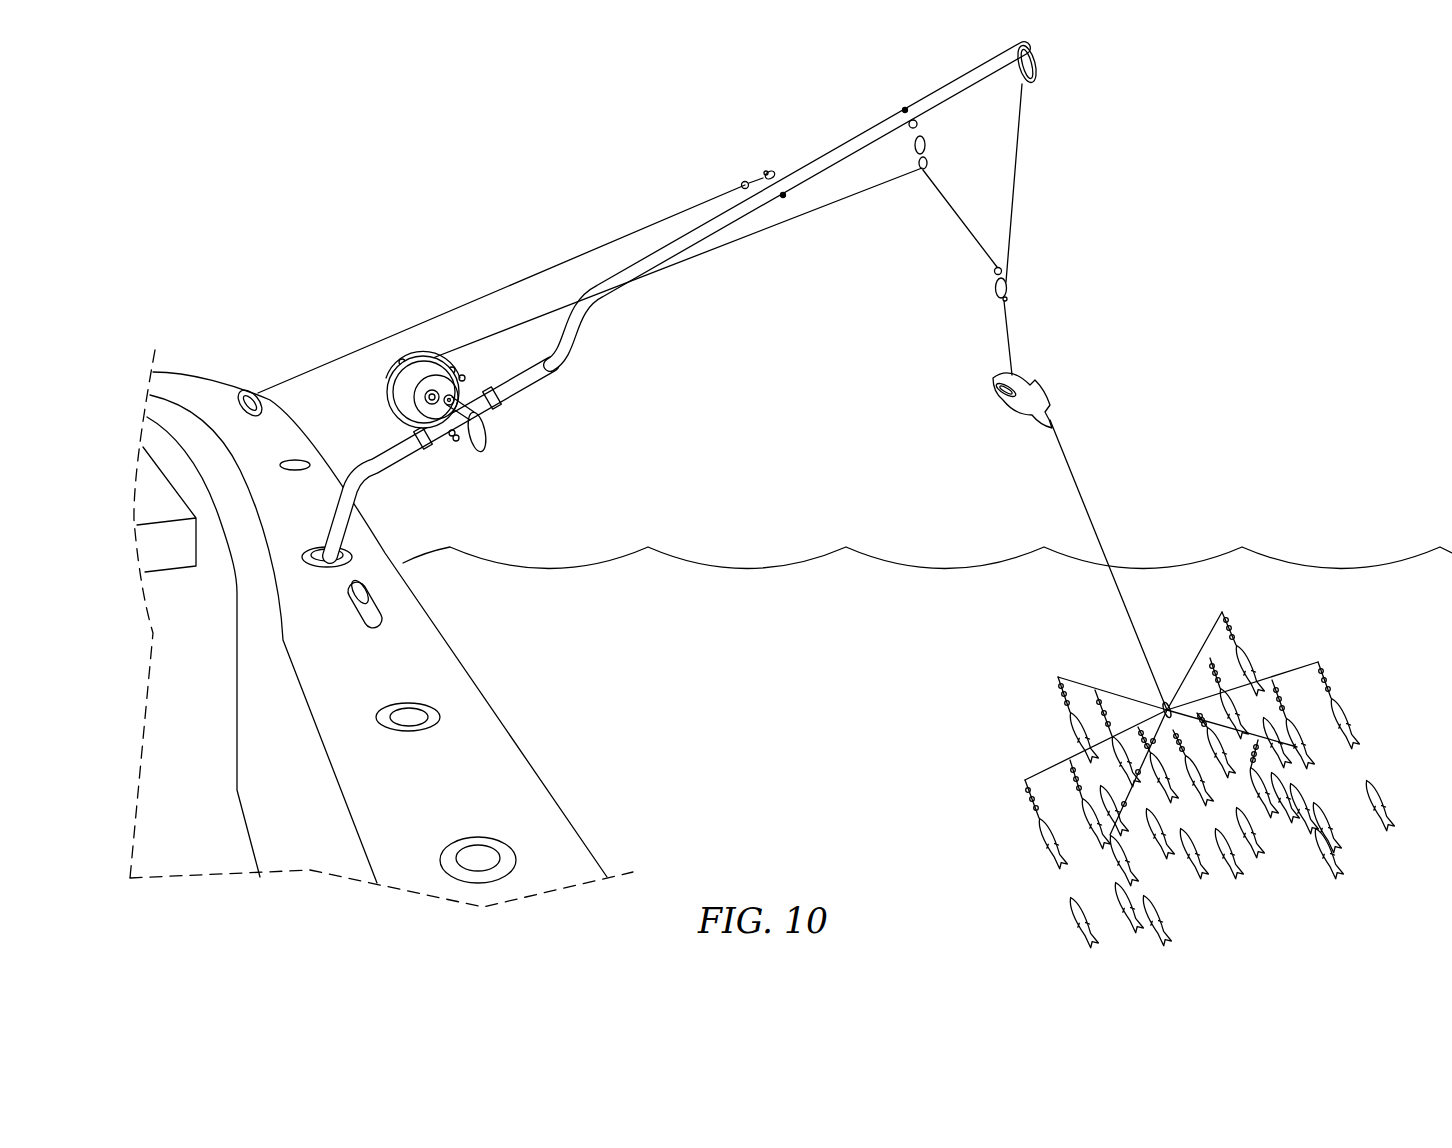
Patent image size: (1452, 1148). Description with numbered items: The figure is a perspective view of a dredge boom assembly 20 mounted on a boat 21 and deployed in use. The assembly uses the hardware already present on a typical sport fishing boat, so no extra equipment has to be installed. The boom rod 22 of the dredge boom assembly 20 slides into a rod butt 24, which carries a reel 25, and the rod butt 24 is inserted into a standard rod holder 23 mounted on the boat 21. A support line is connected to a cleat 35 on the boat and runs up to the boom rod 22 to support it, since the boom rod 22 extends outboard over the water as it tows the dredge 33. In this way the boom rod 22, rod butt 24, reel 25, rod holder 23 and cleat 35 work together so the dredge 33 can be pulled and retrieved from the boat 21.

The dredge boom assembly 20 is at (636, 178).
The boat 21 is at (500, 708).
The boom rod 22 is at (862, 131).
The rod holder 23 is at (348, 550).
The rod butt 24 is at (378, 478).
The reel 25 is at (387, 388).
The dredge 33 is at (1022, 724).
The cleat 35 is at (247, 390).